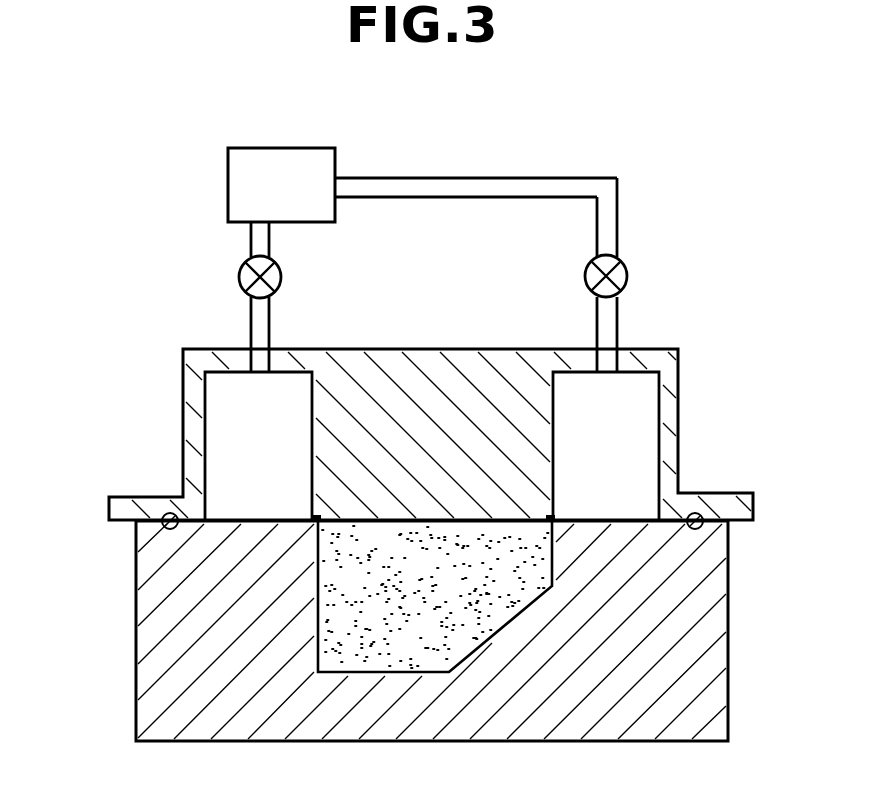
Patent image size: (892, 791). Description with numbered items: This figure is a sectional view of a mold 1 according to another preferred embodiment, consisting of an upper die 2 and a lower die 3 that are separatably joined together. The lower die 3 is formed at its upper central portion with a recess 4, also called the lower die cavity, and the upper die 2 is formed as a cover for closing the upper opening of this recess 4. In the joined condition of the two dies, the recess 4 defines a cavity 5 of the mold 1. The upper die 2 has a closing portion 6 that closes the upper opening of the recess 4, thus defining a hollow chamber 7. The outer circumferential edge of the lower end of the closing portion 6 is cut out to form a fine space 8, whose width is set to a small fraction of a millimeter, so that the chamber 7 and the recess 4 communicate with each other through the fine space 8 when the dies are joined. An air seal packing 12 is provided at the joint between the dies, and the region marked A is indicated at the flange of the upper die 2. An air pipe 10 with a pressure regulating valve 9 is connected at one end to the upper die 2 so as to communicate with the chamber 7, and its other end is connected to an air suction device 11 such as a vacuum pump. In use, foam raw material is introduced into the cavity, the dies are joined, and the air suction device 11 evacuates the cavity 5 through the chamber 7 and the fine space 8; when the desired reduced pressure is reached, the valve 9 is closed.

The mold 1 is at (634, 228).
The upper die 2 is at (672, 400).
The lower die 3 is at (703, 627).
The recess (lower die cavity) 4 is at (543, 570).
The cavity 5 is at (320, 546).
The closing portion 6 is at (328, 450).
The hollow chamber 7 is at (674, 386).
The fine space 8 is at (558, 515).
The pressure regulating valve 9 is at (240, 272).
The air pipe 10 is at (507, 185).
The air suction device 11 is at (262, 160).
The air seal packing 12 is at (174, 514).
The flange portion A is at (110, 497).